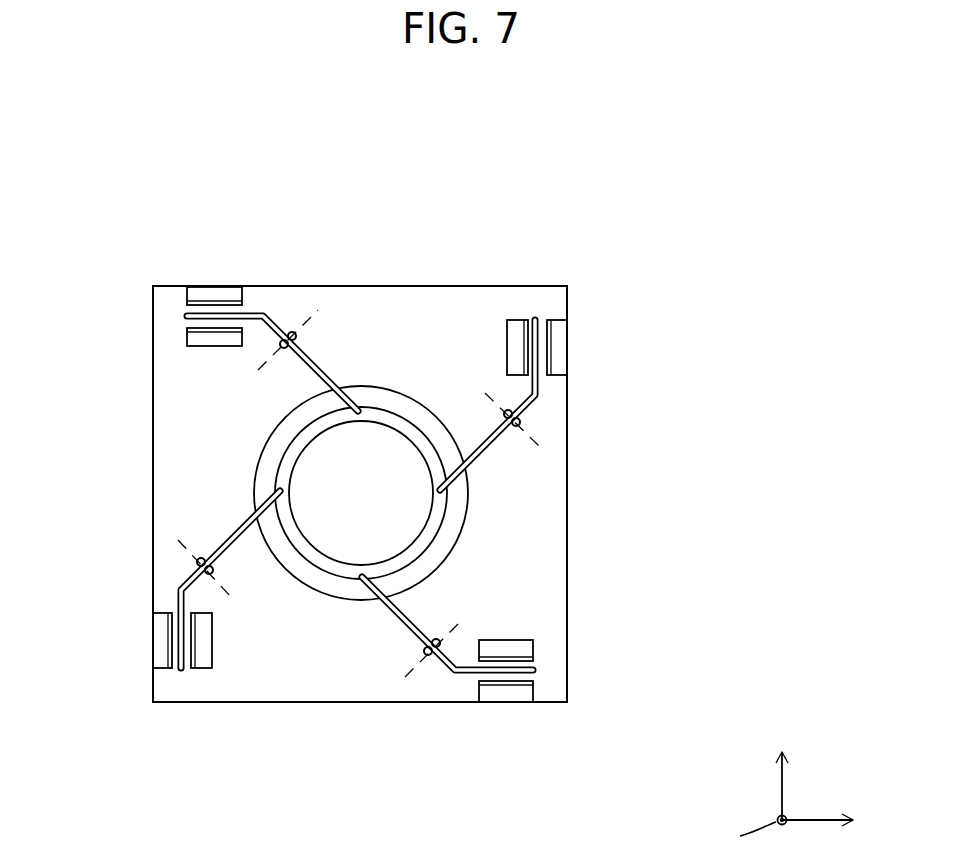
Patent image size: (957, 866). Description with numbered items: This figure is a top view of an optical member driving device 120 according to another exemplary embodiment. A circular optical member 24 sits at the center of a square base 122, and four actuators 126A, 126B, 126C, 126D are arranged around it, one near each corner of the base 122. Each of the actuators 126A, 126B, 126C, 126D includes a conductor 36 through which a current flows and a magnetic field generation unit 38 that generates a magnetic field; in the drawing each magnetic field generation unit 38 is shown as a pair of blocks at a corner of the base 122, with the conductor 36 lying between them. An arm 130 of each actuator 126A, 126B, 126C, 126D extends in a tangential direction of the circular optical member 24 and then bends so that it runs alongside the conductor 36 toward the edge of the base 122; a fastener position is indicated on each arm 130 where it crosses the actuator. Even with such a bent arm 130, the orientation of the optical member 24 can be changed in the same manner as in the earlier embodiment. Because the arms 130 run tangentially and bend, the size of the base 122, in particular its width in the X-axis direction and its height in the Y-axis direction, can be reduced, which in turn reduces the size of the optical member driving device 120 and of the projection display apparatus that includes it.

The optical member driving device 120 is at (146, 232).
The base 122 is at (172, 405).
The optical member 24 is at (377, 507).
The actuator 126A is at (222, 527).
The actuator 126B is at (487, 468).
The actuator 126C is at (395, 620).
The actuator 126D is at (325, 358).
The arm 130 is at (300, 350).
The conductor 36 is at (221, 325).
The magnetic field generation unit 38 is at (219, 280).